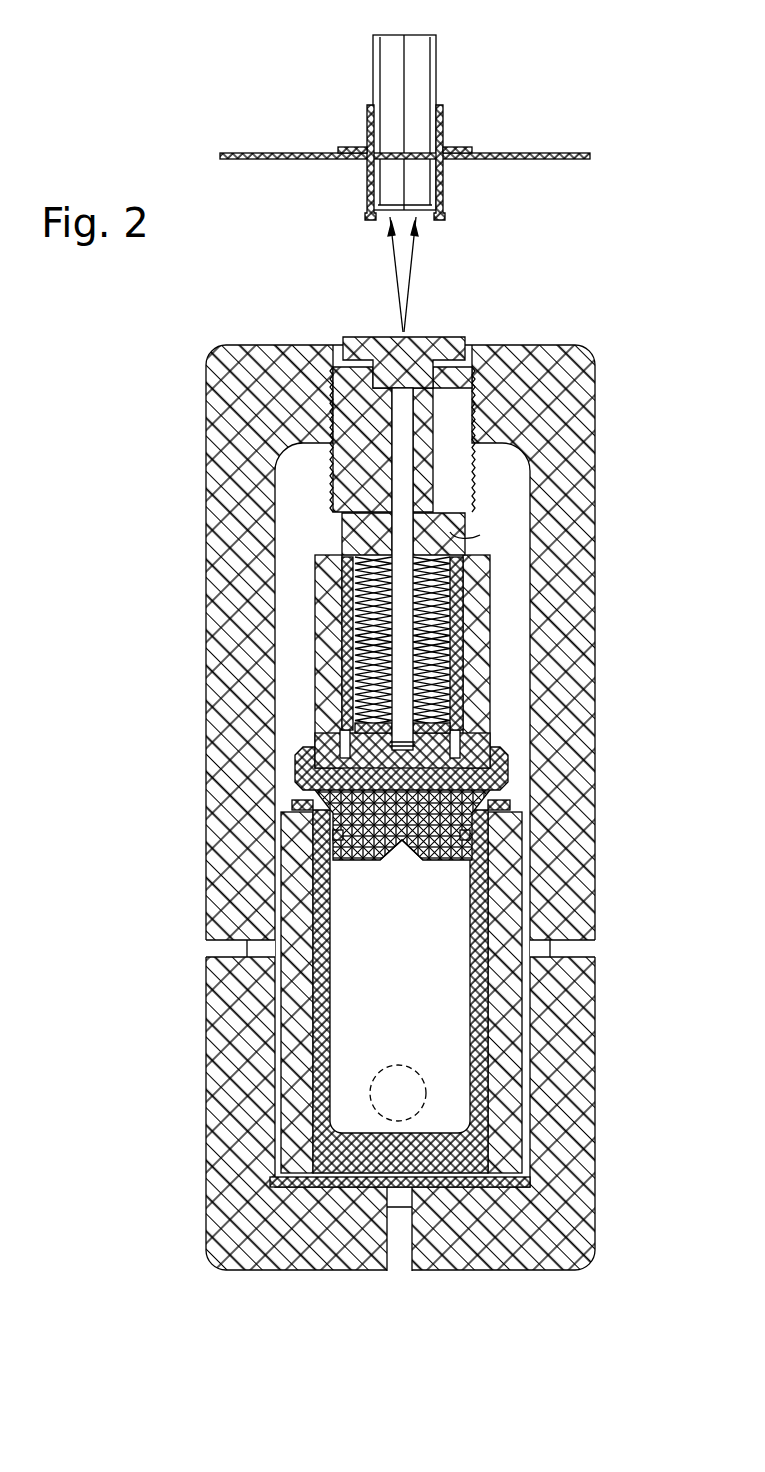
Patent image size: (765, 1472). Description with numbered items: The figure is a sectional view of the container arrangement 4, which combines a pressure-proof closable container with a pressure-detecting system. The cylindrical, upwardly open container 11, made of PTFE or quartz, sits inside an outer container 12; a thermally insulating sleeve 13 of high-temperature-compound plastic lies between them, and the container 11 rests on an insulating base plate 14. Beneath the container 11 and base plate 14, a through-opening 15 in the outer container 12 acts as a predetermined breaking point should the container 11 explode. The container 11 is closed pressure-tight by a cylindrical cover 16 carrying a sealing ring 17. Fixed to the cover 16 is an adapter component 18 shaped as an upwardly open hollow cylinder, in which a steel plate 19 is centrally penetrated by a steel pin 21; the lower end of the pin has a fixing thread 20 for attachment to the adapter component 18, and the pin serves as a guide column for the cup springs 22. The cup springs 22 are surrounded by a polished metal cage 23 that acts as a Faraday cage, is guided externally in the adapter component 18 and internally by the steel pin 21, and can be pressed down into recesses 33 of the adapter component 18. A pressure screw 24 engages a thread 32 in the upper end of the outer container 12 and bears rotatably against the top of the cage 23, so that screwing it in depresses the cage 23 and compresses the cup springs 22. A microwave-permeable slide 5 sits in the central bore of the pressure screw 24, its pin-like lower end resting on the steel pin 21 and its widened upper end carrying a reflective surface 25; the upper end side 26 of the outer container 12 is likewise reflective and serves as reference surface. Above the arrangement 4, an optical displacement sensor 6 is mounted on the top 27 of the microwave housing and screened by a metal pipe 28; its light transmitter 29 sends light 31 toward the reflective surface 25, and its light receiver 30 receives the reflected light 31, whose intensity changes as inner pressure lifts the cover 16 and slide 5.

The container arrangement 4 is at (371, 802).
The slide 5 is at (402, 328).
The optical displacement sensor 6 is at (409, 105).
The container 11 is at (313, 1030).
The outer container 12 is at (216, 1131).
The sleeve 13 is at (508, 1055).
The insulating base plate 14 is at (468, 1186).
The through-opening 15 is at (398, 1245).
The cover 16 is at (512, 780).
The sealing ring 17 is at (455, 862).
The adapter component 18 is at (478, 653).
The steel plate 19 is at (457, 730).
The fixing thread 20 is at (340, 752).
The steel pin 21 is at (347, 633).
The cup springs 22 is at (342, 548).
The cage 23 is at (450, 532).
The pressure screw 24 is at (462, 485).
The reflective surface 25 is at (368, 337).
The upper end side 26 is at (267, 345).
The top 27 is at (541, 153).
The metal pipe 28 is at (367, 191).
The light transmitter 29 is at (431, 82).
The light receiver 30 is at (373, 72).
The light 31 is at (418, 234).
The thread 32 is at (334, 440).
The recesses 33 is at (480, 735).